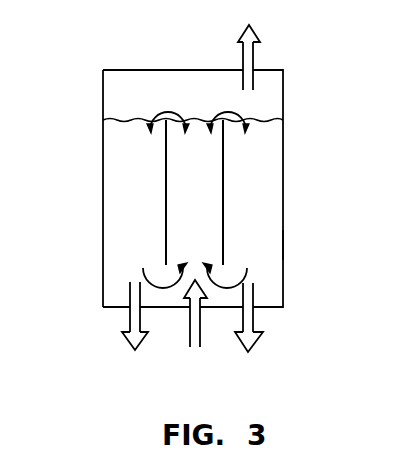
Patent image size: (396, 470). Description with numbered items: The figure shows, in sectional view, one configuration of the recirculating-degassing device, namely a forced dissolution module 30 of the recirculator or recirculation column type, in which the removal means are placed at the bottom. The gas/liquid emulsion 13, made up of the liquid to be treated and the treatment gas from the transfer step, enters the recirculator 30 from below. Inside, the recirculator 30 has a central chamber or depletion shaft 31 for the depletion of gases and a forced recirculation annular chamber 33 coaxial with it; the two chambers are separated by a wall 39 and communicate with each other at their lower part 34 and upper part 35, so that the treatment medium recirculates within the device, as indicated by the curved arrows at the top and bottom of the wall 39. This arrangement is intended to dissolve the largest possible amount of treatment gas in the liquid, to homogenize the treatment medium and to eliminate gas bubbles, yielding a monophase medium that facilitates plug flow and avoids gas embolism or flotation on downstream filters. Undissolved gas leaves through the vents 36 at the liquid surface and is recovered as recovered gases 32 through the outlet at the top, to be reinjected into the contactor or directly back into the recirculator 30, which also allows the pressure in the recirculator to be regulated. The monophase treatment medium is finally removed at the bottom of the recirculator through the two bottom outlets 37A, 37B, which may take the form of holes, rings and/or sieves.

The gas/liquid emulsion 13 is at (192, 324).
The forced dissolution module 30 is at (283, 200).
The depletion shaft 31 is at (200, 166).
The recovered gases 32 is at (255, 59).
The forced recirculation annular chamber 33 is at (268, 247).
The lower part 34 is at (141, 87).
The upper part 35 is at (145, 275).
The vents 36 is at (250, 93).
The bottom removal means 37A is at (125, 318).
The bottom removal means 37B is at (255, 320).
The wall 39 is at (166, 213).